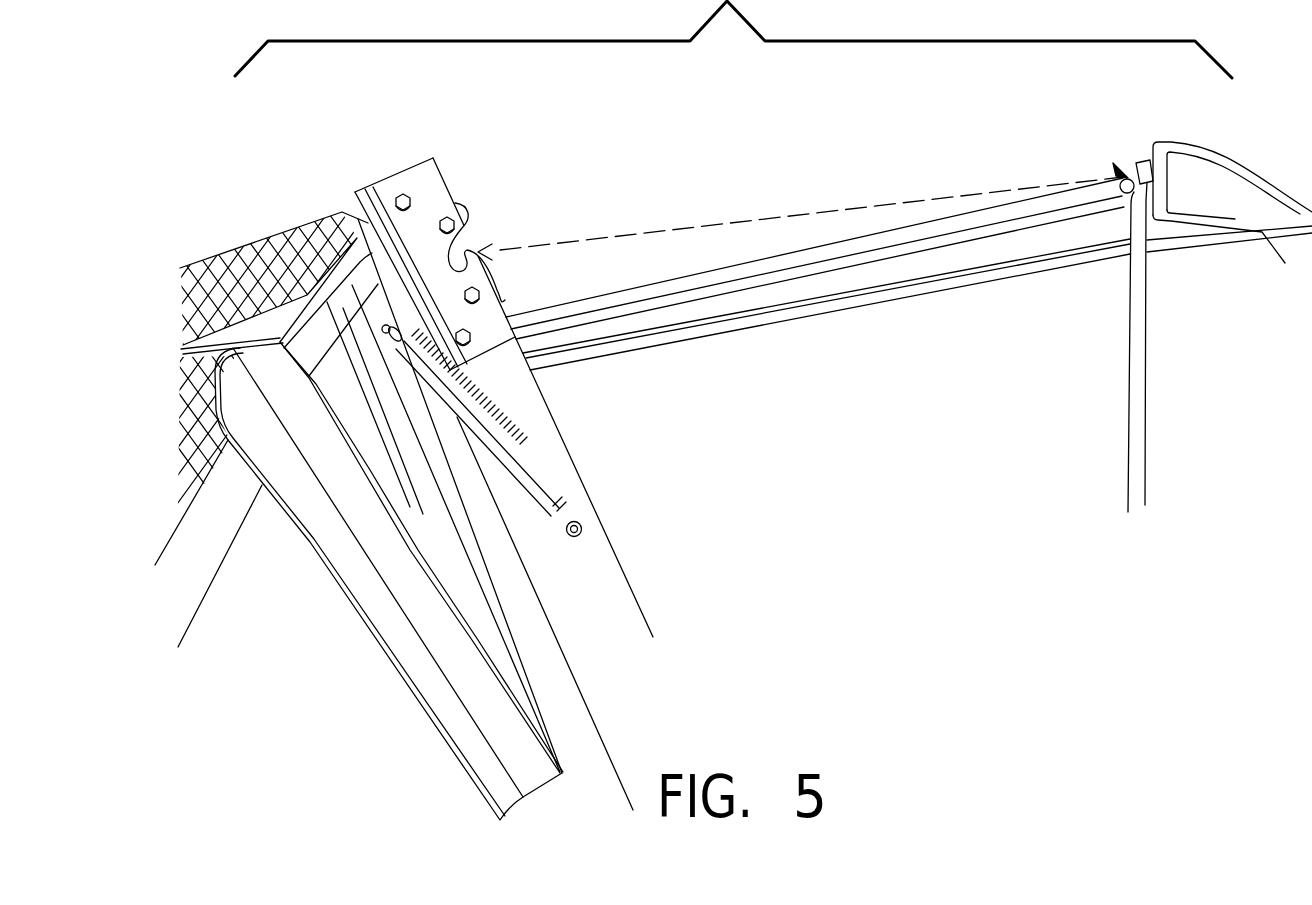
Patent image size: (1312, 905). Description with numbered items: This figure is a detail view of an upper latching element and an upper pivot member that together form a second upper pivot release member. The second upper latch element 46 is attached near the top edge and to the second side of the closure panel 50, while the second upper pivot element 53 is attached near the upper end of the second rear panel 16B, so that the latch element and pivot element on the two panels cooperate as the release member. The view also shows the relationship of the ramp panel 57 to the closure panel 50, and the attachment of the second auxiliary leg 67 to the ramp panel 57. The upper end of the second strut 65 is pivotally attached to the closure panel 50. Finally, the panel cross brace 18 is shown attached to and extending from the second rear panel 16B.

The second rear panel 16B is at (1163, 343).
The panel cross brace 18 is at (931, 263).
The second upper latch element 46 is at (437, 156).
The closure panel 50 is at (603, 600).
The second upper pivot element 53 is at (1140, 162).
The ramp panel 57 is at (258, 255).
The second strut 65 is at (527, 467).
The second auxiliary leg 67 is at (297, 503).